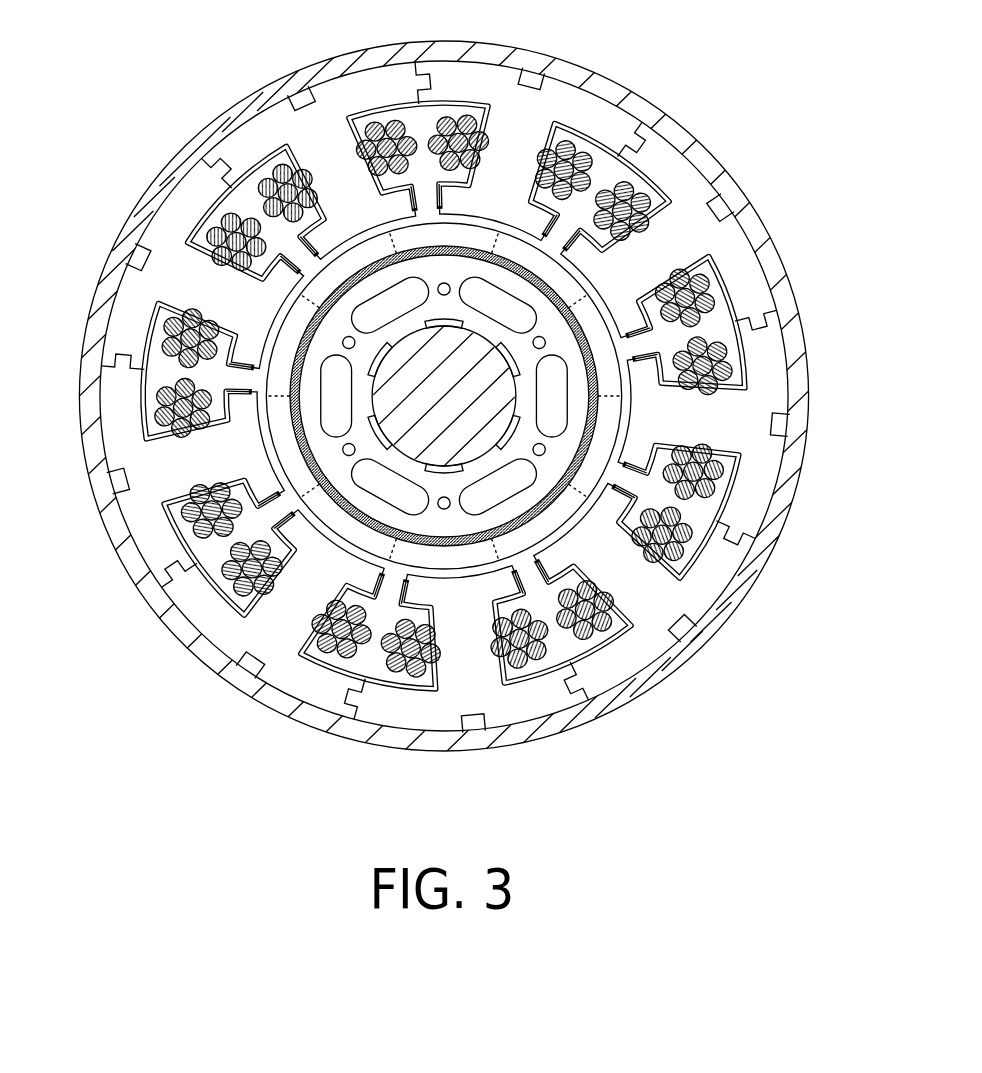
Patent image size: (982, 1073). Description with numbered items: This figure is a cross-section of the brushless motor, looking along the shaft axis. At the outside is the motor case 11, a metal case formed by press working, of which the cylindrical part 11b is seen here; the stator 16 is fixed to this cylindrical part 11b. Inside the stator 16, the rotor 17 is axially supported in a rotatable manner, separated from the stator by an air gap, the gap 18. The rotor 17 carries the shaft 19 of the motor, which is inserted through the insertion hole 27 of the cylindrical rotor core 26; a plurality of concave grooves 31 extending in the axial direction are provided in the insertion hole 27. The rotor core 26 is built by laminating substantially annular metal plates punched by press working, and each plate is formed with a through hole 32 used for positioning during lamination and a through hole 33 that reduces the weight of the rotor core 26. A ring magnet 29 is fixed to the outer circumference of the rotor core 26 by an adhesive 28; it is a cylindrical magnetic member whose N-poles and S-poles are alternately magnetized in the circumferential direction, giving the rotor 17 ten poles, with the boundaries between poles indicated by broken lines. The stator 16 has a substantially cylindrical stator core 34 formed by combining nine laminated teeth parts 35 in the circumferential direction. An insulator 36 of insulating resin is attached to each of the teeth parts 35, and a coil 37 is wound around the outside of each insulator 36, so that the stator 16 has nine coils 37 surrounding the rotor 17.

The motor case 11 is at (790, 527).
The cylindrical part 11b is at (237, 693).
The stator 16 is at (438, 401).
The rotor 17 is at (443, 400).
The gap 18 is at (483, 572).
The shaft 19 is at (418, 448).
The rotor core 26 is at (588, 410).
The insertion hole 27 is at (246, 667).
The adhesive 28 is at (560, 490).
The ring magnet 29 is at (288, 394).
The concave grooves 31 is at (480, 335).
The through hole 32 is at (344, 341).
The through hole 33 is at (387, 303).
The stator core 34 is at (762, 351).
The teeth parts 35 is at (755, 284).
The insulator 36 is at (686, 565).
The coil 37 is at (440, 135).